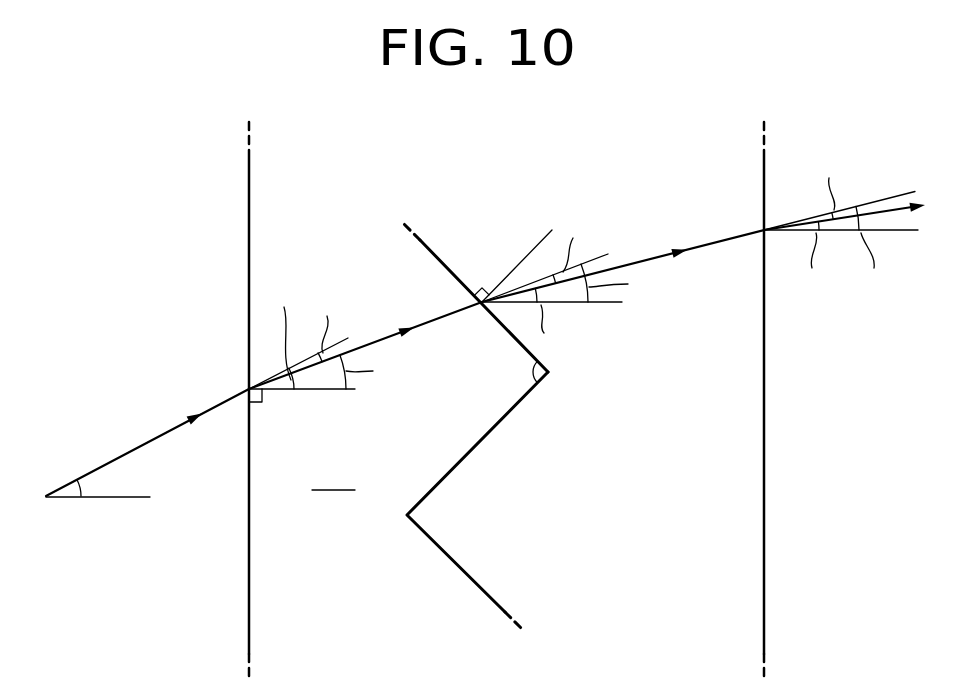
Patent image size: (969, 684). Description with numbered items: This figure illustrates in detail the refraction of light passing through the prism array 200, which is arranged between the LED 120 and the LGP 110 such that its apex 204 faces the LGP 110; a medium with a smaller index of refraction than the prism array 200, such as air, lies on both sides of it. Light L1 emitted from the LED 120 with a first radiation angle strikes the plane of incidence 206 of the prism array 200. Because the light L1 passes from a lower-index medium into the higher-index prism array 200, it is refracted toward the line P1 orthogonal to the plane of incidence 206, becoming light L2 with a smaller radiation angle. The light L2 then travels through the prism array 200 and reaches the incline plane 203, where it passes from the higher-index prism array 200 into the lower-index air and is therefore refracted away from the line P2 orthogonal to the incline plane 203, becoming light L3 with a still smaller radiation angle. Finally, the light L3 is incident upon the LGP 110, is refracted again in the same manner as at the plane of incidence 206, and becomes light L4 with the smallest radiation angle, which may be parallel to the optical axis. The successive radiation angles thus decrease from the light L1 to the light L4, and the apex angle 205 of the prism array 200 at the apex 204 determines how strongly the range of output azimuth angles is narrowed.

The LED 120 is at (38, 489).
The plane of incidence 206 is at (249, 272).
The prism array 200 is at (418, 402).
The incline plane 203 is at (453, 271).
The apex 204 is at (553, 372).
The apex angle 205 is at (530, 372).
The LGP 110 is at (848, 490).
The light L1 is at (153, 440).
The light L2 is at (378, 340).
The light L3 is at (640, 261).
The light L4 is at (887, 209).
The line orthogonal to the plane of incidence P1 is at (336, 391).
The line orthogonal to the incline plane P2 is at (522, 260).